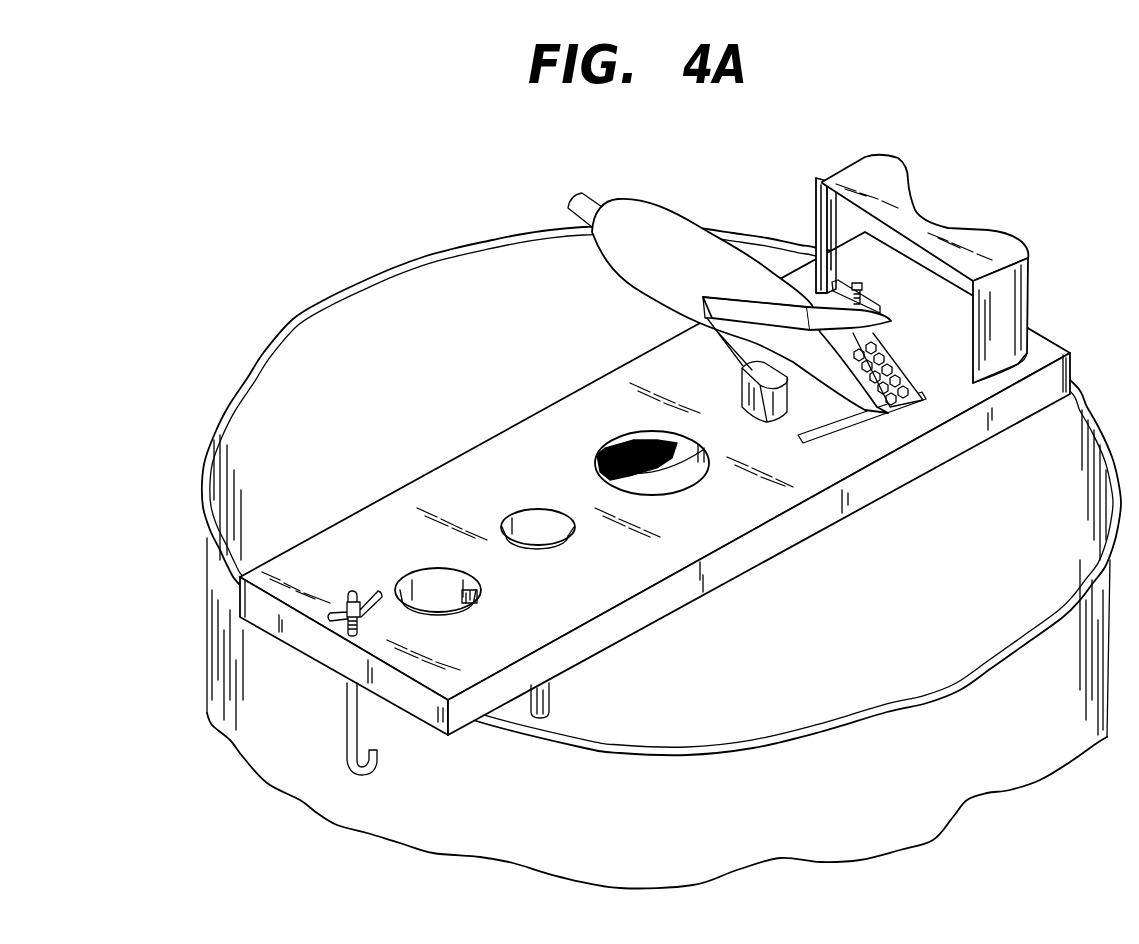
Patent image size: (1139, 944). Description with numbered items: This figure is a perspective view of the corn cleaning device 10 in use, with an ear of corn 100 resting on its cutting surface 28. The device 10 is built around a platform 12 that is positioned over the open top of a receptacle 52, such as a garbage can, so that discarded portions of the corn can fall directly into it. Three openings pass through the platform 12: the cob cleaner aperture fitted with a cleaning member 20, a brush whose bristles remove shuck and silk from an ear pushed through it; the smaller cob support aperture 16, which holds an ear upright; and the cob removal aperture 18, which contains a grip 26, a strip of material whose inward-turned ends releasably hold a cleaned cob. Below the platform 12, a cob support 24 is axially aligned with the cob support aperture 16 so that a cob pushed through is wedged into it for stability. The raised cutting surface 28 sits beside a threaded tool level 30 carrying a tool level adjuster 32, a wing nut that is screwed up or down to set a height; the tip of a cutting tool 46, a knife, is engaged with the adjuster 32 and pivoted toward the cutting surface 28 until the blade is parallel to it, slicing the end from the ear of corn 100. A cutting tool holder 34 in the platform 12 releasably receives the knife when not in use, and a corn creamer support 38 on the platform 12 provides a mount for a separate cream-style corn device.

The corn cleaning device 10 is at (474, 218).
The platform 12 is at (543, 420).
The cob support aperture 16 is at (528, 503).
The cob removal aperture 18 is at (422, 567).
The cleaning member 20 is at (623, 443).
The cob support 24 is at (570, 702).
The grip 26 is at (470, 606).
The cutting surface 28 is at (703, 320).
The tool level 30 is at (857, 275).
The tool level adjuster 32 is at (823, 182).
The cutting tool holder 34 is at (857, 416).
The corn creamer support 38 is at (988, 238).
The cutting tool 46 is at (743, 305).
The receptacle 52 is at (450, 819).
The ear of corn 100 is at (617, 217).